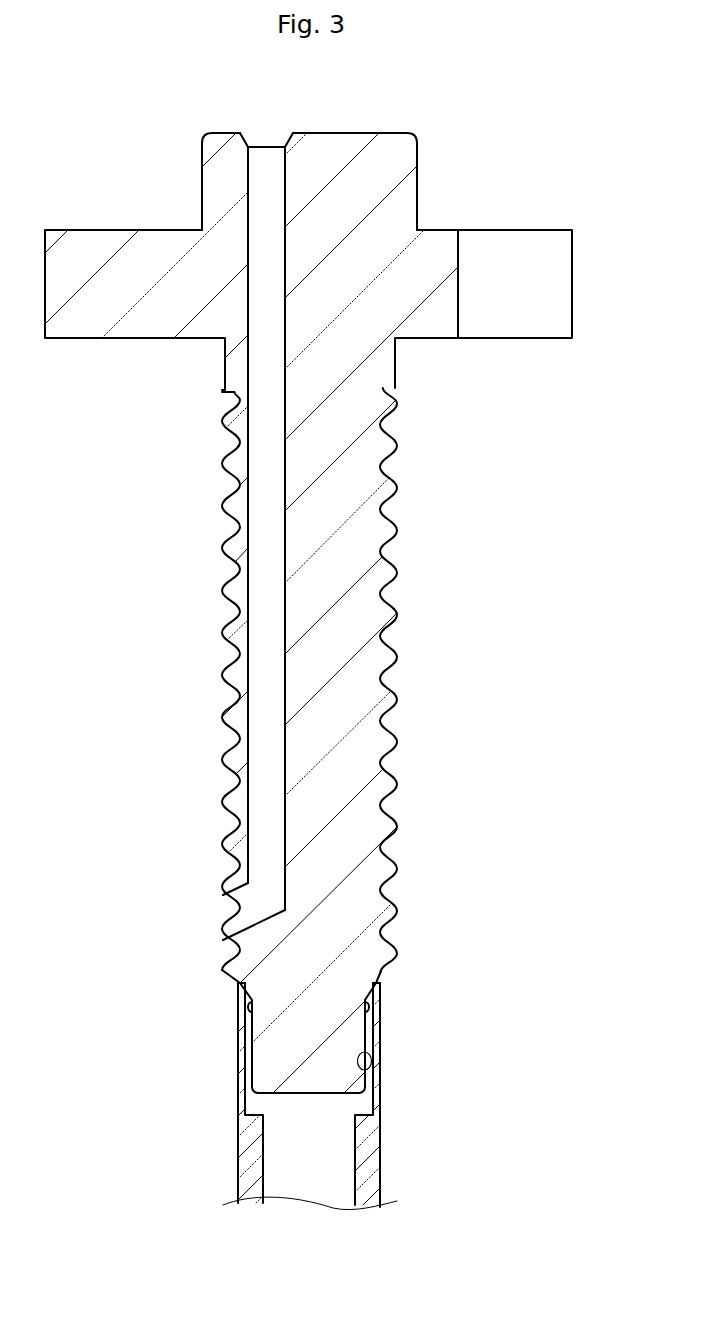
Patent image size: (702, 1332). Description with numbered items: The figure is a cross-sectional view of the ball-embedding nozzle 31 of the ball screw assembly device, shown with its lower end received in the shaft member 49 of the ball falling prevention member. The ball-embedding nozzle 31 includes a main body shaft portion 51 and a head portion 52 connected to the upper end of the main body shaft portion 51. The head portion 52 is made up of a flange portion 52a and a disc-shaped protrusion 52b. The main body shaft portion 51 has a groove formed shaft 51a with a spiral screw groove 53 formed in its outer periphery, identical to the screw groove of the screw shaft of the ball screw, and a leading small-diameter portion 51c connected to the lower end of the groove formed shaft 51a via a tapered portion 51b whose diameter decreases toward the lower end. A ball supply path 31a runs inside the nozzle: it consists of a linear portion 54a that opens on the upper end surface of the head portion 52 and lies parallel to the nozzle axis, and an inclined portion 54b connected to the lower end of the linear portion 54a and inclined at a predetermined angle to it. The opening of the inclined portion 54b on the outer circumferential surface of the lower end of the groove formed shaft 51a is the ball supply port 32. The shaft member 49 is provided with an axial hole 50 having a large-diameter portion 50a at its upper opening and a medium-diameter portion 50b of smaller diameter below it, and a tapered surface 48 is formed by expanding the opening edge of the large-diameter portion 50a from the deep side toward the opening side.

The ball-embedding nozzle 31 is at (405, 555).
The ball supply path 31a is at (250, 735).
The ball supply port 32 is at (222, 908).
The tapered surface 48 is at (241, 982).
The shaft member 49 is at (387, 1157).
The axial hole 50 is at (261, 1146).
The large-diameter portion 50a is at (371, 1063).
The medium-diameter portion 50b is at (353, 1183).
The main body shaft portion 51 is at (393, 750).
The groove formed shaft 51a is at (397, 488).
The tapered portion 51b is at (383, 988).
The leading small-diameter portion 51c is at (357, 1037).
The head portion 52 is at (85, 340).
The flange portion 52a is at (428, 327).
The disc-shaped protrusion 52b is at (335, 150).
The screw groove 53 is at (388, 636).
The linear portion 54a is at (258, 506).
The inclined portion 54b is at (237, 905).